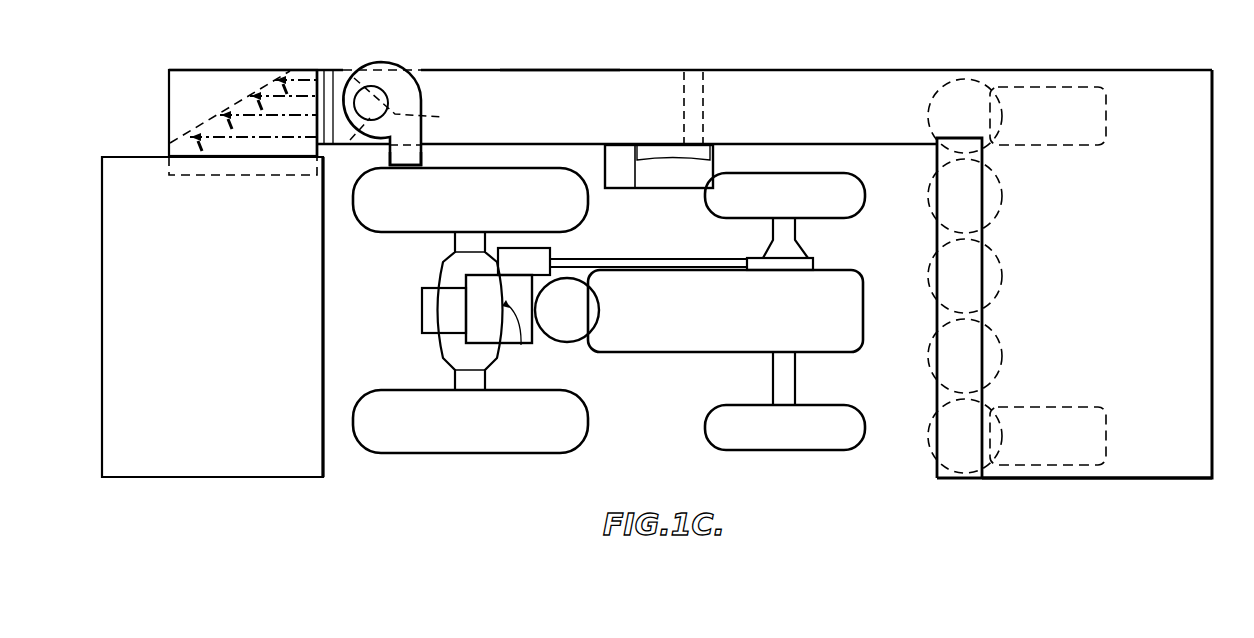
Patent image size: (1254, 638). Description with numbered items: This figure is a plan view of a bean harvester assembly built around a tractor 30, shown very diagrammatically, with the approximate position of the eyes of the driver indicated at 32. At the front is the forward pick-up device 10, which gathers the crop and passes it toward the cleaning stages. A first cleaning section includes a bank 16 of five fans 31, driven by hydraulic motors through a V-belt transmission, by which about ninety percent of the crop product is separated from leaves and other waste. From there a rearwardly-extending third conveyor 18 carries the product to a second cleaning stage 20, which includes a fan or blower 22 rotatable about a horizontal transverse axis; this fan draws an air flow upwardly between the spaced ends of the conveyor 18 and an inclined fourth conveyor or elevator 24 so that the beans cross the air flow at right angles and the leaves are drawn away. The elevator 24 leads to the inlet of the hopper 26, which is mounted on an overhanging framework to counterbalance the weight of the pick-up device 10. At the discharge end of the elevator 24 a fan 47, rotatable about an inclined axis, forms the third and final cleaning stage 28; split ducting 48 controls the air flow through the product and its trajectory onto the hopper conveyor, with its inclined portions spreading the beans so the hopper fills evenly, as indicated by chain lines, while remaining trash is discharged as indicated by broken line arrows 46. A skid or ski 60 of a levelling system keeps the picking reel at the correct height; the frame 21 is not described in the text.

The forward pick-up device 10 is at (1152, 491).
The bank of blowers or fans 16 is at (928, 320).
The third conveyor 18 is at (748, 76).
The second crop-separating or cleaning stage 20 is at (672, 66).
The frame 21 is at (1198, 382).
The fan or blower 22 is at (664, 178).
The fourth conveyor or elevator 24 is at (543, 69).
The hopper 26 is at (218, 302).
The third and final cleaning stage 28 is at (406, 68).
The tractor 30 is at (774, 318).
The fans 31 is at (1000, 360).
The position of the eyes of the driver 32 is at (830, 115).
The broken line arrows 46 is at (420, 152).
The fan 47 is at (413, 109).
The split ducting 48 is at (276, 80).
The skid or ski 60 is at (1073, 86).